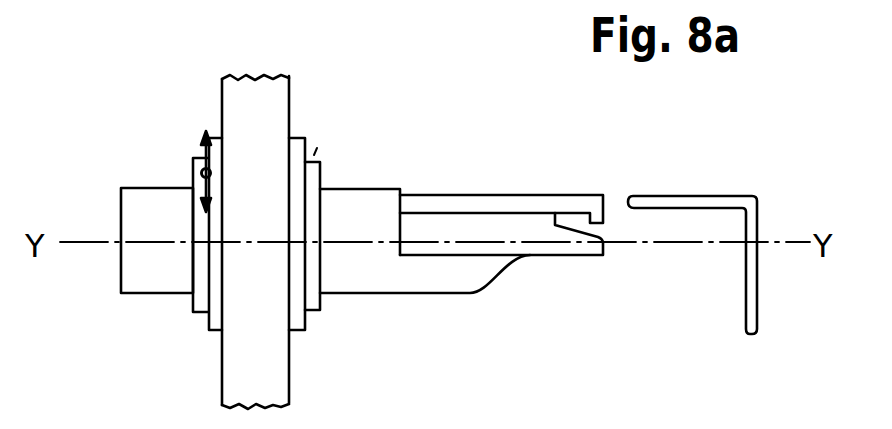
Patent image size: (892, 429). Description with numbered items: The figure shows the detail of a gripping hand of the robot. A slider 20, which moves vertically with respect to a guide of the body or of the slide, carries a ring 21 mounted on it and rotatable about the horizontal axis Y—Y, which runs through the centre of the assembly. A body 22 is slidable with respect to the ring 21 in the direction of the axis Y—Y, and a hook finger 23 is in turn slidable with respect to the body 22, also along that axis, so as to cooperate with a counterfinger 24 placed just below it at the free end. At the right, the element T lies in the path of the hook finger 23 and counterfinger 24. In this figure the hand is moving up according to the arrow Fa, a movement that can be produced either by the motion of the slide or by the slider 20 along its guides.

The slider 20 is at (215, 312).
The ring 21 is at (192, 271).
The body 22 is at (458, 274).
The hook finger 23 is at (550, 195).
The counterfinger 24 is at (567, 253).
The angle strip T is at (700, 195).
The arrow Fa is at (202, 157).